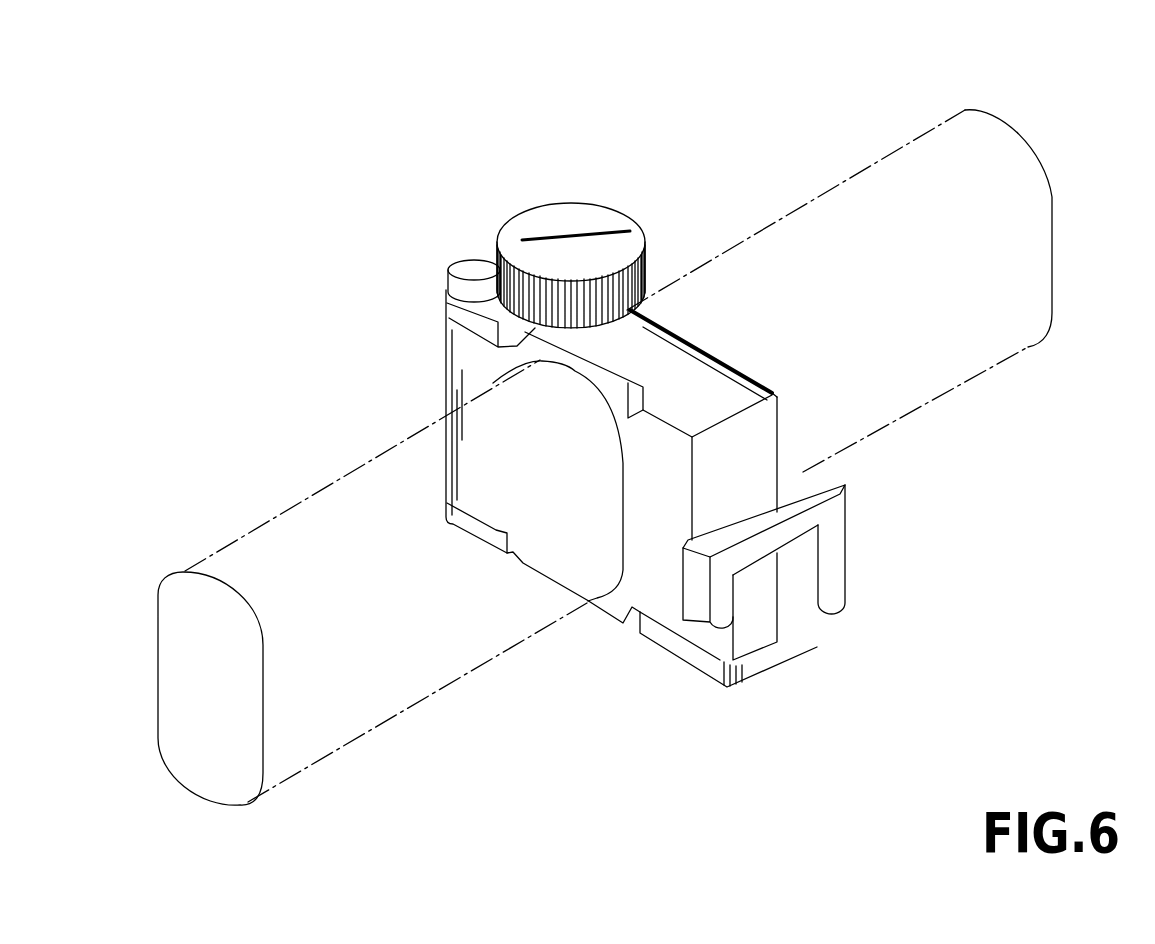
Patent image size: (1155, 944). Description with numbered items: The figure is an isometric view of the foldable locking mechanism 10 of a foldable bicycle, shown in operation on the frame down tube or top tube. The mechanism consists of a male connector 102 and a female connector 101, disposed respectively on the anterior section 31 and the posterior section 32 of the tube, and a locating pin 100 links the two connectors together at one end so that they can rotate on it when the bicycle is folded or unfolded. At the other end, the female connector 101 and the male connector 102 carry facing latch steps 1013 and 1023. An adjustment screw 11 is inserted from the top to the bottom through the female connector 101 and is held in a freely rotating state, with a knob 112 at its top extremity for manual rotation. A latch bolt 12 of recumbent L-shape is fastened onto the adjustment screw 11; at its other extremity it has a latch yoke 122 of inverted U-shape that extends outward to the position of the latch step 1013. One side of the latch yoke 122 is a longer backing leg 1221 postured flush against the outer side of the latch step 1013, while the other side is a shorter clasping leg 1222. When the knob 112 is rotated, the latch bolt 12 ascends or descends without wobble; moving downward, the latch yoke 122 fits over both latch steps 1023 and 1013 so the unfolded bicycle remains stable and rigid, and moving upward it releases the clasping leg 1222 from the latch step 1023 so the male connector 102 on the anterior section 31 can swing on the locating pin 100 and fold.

The foldable locking mechanism 10 is at (622, 453).
The locating pin 100 is at (470, 282).
The female connector 101 is at (697, 373).
The male connector 102 is at (497, 383).
The adjustment screw 11 is at (516, 214).
The knob 112 is at (527, 236).
The latch bolt 12 is at (814, 600).
The latch yoke 122 is at (833, 483).
The backing leg 1221 is at (845, 564).
The clasping leg 1222 is at (704, 622).
The latch step 1013 is at (795, 564).
The latch step 1023 is at (728, 662).
The anterior section 31 is at (875, 222).
The posterior section 32 is at (358, 527).